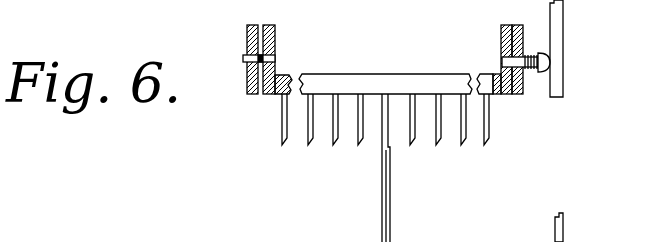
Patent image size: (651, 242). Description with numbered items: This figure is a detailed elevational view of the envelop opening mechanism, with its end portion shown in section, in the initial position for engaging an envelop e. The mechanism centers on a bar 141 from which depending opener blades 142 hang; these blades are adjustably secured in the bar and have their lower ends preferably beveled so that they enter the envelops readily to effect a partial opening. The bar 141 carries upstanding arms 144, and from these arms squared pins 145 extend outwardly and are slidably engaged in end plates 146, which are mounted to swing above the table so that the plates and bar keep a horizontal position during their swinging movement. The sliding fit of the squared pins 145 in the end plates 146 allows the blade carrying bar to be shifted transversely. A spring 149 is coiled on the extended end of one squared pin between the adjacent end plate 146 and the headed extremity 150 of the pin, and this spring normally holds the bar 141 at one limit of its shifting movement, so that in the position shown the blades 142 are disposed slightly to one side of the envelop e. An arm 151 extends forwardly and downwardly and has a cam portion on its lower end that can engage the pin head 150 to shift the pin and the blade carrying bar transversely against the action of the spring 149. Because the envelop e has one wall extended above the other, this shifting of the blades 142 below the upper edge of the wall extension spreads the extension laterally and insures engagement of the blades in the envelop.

The bar 141 is at (355, 84).
The opener blades 142 is at (485, 127).
The upstanding arms 144 is at (277, 30).
The squared pins 145 is at (242, 61).
The end plates 146 is at (246, 31).
The spring 149 is at (532, 72).
The headed extremity 150 is at (542, 73).
The arm 151 is at (557, 42).
The envelop e is at (380, 193).